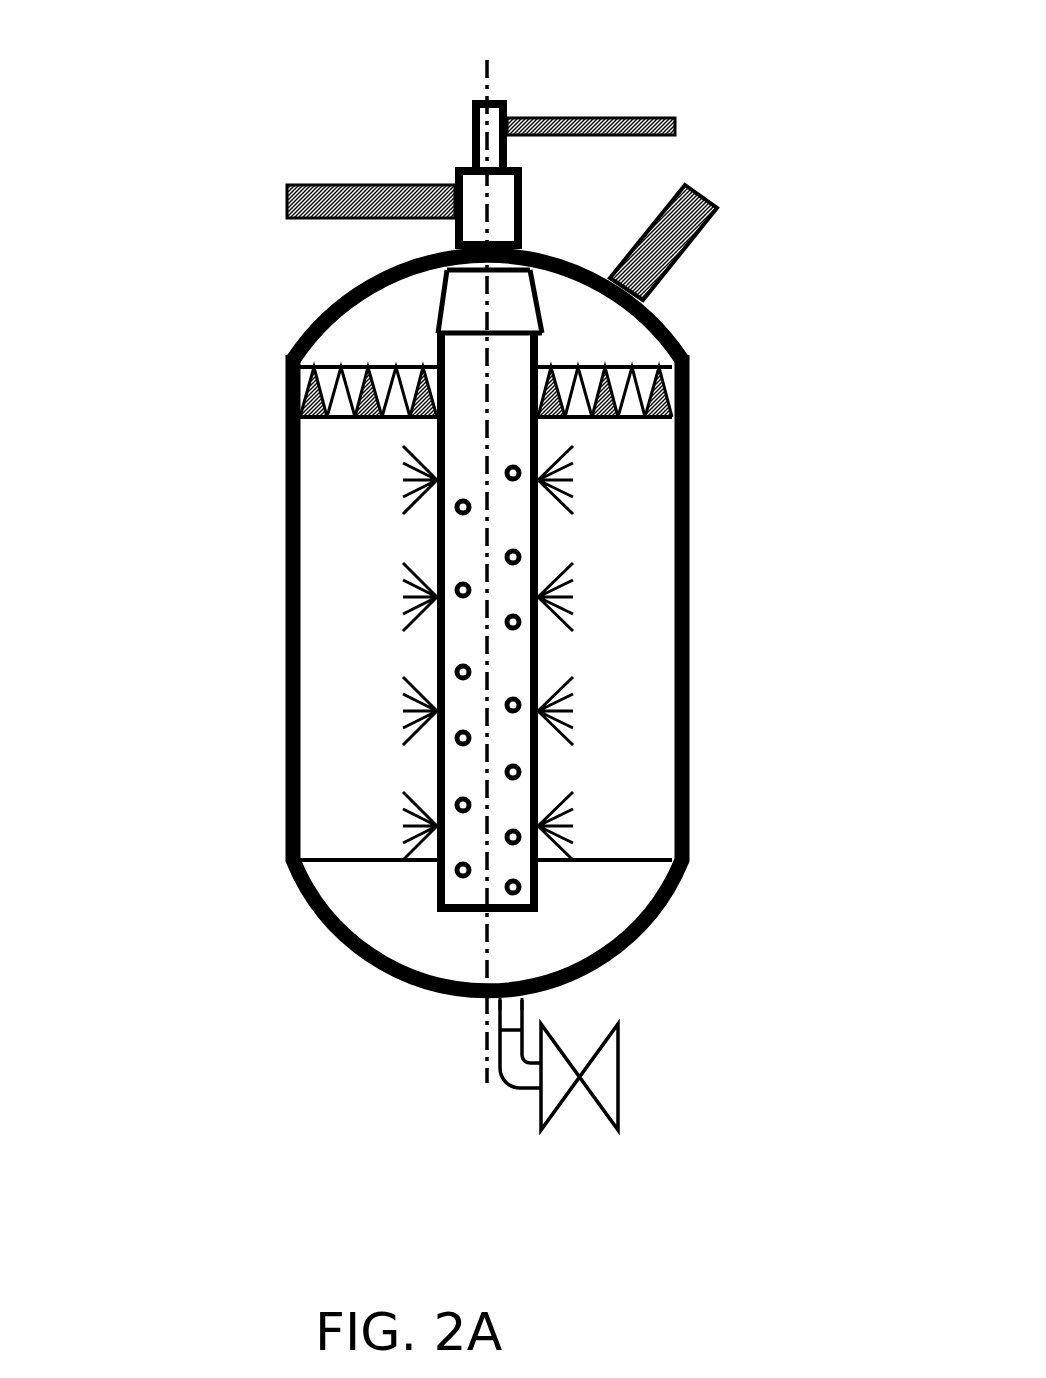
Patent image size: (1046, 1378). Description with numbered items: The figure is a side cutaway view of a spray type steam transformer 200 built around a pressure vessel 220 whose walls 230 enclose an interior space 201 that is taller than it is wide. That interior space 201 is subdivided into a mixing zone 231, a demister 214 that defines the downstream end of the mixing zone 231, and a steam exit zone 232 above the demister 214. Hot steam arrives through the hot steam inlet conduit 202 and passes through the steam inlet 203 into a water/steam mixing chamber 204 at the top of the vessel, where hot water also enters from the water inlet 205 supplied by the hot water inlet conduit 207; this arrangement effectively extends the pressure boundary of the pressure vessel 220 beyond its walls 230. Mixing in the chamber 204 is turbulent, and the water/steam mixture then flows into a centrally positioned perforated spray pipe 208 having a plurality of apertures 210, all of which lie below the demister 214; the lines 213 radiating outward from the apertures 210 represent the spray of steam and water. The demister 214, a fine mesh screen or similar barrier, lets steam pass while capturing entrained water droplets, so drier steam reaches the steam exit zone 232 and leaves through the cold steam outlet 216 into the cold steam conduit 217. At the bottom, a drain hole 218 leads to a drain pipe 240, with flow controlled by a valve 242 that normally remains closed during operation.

The steam transformer 200 is at (745, 567).
The interior space 201 is at (375, 563).
The hot steam inlet conduit 202 is at (287, 185).
The steam inlet 203 is at (457, 183).
The water/steam mixing chamber 204 is at (448, 250).
The water inlet 205 is at (507, 107).
The hot water inlet conduit 207 is at (667, 118).
The perforated spray pipe 208 is at (462, 625).
The apertures 210 is at (463, 805).
The lines 213 is at (582, 743).
The demister 214 is at (285, 395).
The cold steam outlet 216 is at (676, 330).
The cold steam conduit 217 is at (647, 225).
The drain hole 218 is at (512, 988).
The pressure vessel 220 is at (290, 500).
The walls 230 is at (290, 754).
The mixing zone 231 is at (660, 633).
The steam exit zone 232 is at (624, 339).
The drain pipe 240 is at (500, 1060).
The valve 242 is at (620, 1075).